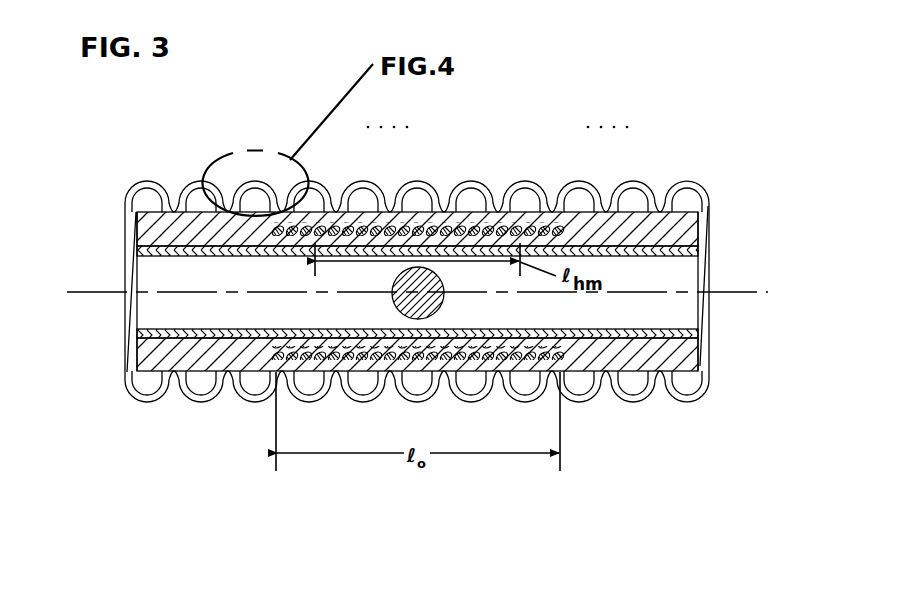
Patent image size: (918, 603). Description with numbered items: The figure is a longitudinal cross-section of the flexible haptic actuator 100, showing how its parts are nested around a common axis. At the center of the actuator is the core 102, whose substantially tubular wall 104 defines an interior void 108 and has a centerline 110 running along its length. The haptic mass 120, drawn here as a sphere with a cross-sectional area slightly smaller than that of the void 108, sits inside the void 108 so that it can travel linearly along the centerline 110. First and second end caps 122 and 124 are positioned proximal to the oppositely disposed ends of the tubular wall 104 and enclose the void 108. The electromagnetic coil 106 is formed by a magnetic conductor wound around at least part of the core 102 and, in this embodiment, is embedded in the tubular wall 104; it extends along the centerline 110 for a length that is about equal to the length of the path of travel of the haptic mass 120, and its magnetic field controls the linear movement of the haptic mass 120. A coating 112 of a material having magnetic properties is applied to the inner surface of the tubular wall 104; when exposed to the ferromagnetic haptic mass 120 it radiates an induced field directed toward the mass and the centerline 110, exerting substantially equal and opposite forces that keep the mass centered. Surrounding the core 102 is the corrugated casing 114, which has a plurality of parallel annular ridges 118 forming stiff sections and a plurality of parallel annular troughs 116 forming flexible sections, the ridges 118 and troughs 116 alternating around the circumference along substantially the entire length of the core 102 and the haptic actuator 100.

The haptic actuator 100 is at (722, 432).
The core 102 is at (686, 212).
The tubular wall 104 is at (698, 235).
The electromagnetic coil 106 is at (277, 353).
The void 108 is at (166, 282).
The centerline 110 is at (83, 292).
The coating 112 is at (183, 327).
The casing 114 is at (562, 360).
The annular troughs 116 is at (445, 210).
The annular ridges 118 is at (477, 184).
The haptic mass 120 is at (404, 311).
The first end cap 122 is at (125, 227).
The second end cap 124 is at (710, 356).